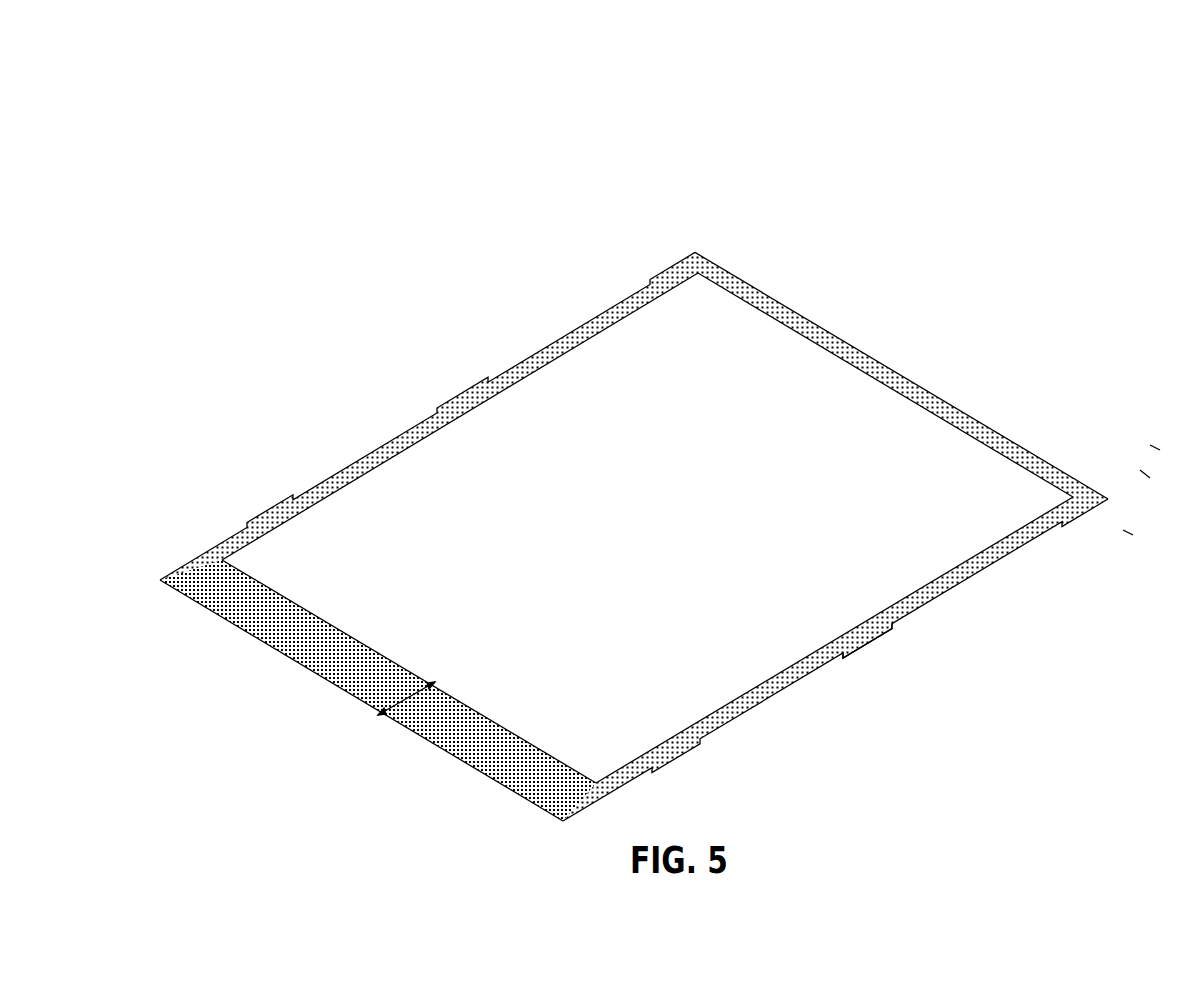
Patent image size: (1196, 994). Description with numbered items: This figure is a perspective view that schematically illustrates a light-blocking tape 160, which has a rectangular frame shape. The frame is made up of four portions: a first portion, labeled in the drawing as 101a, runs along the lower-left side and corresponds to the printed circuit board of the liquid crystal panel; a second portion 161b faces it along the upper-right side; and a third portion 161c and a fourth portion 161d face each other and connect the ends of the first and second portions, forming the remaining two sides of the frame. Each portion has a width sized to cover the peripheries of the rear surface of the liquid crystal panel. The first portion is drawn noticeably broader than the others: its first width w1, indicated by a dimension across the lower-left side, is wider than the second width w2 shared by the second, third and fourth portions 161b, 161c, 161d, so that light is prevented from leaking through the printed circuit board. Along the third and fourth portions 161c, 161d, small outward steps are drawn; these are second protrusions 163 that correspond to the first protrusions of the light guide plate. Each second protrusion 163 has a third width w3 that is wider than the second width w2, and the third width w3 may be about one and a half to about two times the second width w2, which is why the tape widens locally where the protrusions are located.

The light-blocking tape 160 is at (634, 454).
The second portion 161b is at (930, 385).
The third portion 161c is at (565, 325).
The fourth portion 161d is at (935, 620).
The second protrusions 163 is at (893, 630).
The first side portion of frame 101a is at (300, 660).
The first width w1 is at (411, 683).
The second width w2 is at (1135, 503).
The third width w3 is at (1173, 444).